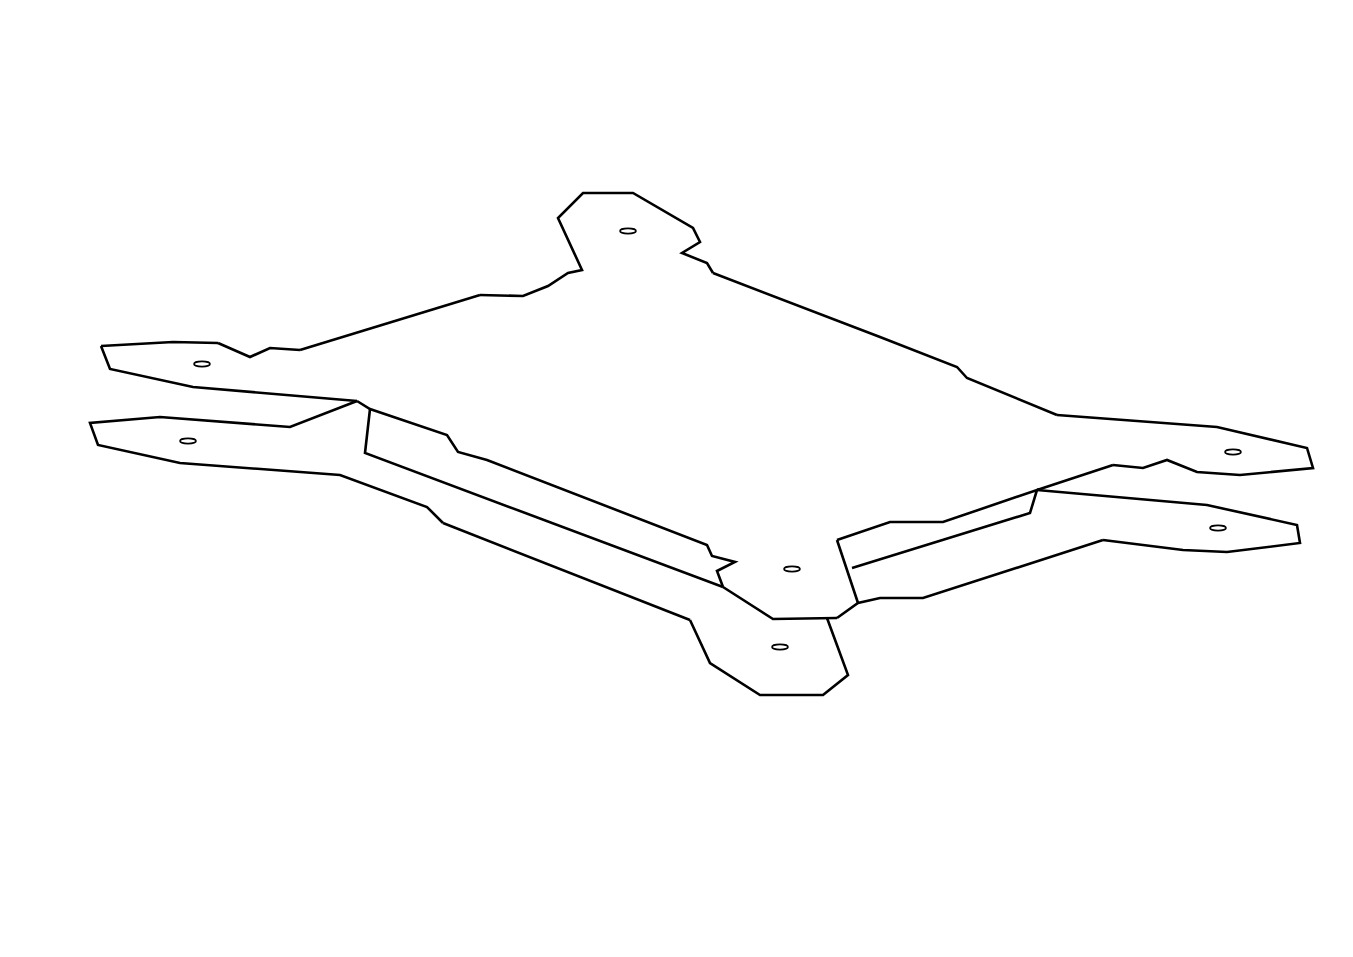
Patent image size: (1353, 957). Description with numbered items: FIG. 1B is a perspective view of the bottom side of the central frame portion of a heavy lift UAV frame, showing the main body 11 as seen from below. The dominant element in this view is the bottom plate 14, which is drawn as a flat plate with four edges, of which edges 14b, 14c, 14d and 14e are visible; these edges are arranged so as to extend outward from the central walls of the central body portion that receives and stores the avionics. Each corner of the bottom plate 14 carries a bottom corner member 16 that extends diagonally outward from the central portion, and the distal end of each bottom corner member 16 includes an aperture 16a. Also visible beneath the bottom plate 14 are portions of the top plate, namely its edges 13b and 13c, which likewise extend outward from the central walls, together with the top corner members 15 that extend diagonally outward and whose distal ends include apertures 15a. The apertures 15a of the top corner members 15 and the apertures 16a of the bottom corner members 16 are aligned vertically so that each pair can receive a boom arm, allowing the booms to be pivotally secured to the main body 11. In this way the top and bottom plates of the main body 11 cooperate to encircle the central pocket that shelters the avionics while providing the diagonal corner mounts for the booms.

The main body 11 is at (701, 465).
The edge of top plate 13b is at (603, 588).
The edge of top plate 13c is at (957, 590).
The bottom plate 14 is at (773, 367).
The edge of bottom plate 14b is at (490, 463).
The edge of bottom plate 14c is at (1003, 512).
The edge of bottom plate 14d is at (890, 338).
The edge of bottom plate 14e is at (397, 312).
The top corner member 15 is at (237, 460).
The aperture of top corner member 15a is at (192, 445).
The bottom corner member 16 is at (230, 358).
The aperture of bottom corner member 16a is at (202, 361).